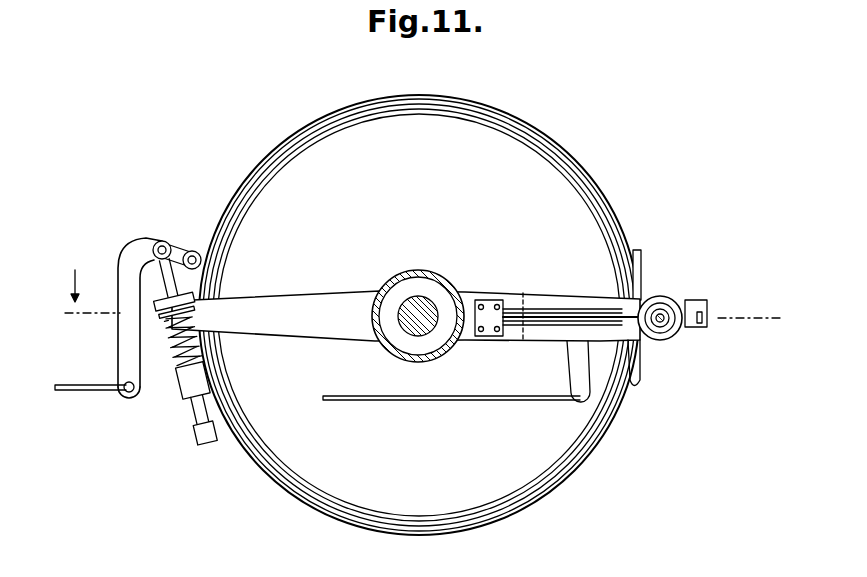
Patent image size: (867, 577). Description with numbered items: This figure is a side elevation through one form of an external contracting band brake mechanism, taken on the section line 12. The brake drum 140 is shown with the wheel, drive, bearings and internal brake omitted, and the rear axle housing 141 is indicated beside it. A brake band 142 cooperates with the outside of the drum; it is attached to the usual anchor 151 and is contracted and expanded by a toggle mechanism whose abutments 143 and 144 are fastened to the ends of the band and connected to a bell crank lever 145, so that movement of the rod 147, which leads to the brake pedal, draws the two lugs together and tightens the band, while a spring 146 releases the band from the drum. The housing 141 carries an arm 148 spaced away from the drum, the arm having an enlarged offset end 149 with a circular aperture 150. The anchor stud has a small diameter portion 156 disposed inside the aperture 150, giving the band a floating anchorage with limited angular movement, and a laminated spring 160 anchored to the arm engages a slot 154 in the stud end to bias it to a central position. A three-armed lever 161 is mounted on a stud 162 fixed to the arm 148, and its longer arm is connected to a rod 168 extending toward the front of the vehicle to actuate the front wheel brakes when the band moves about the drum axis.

The section line 12- 12 is at (421, 282).
The brake drum 140 is at (530, 150).
The rear axle housing 141 is at (425, 274).
The brake band 142 is at (573, 163).
The abutment 143 is at (203, 249).
The abutment 144 is at (186, 386).
The bell crank lever 145 is at (118, 334).
The spring 146 is at (172, 356).
The rod 147 is at (85, 392).
The arm 148 is at (470, 293).
The enlarged offset end 149 is at (664, 290).
The aperture 150 is at (678, 334).
The anchor 151 is at (639, 262).
The slot 154 is at (681, 302).
The small diameter portion 156 is at (655, 343).
The spring 160 is at (530, 344).
The three-armed lever 161 is at (569, 368).
The stud 162 is at (579, 300).
The rod 168 is at (420, 402).